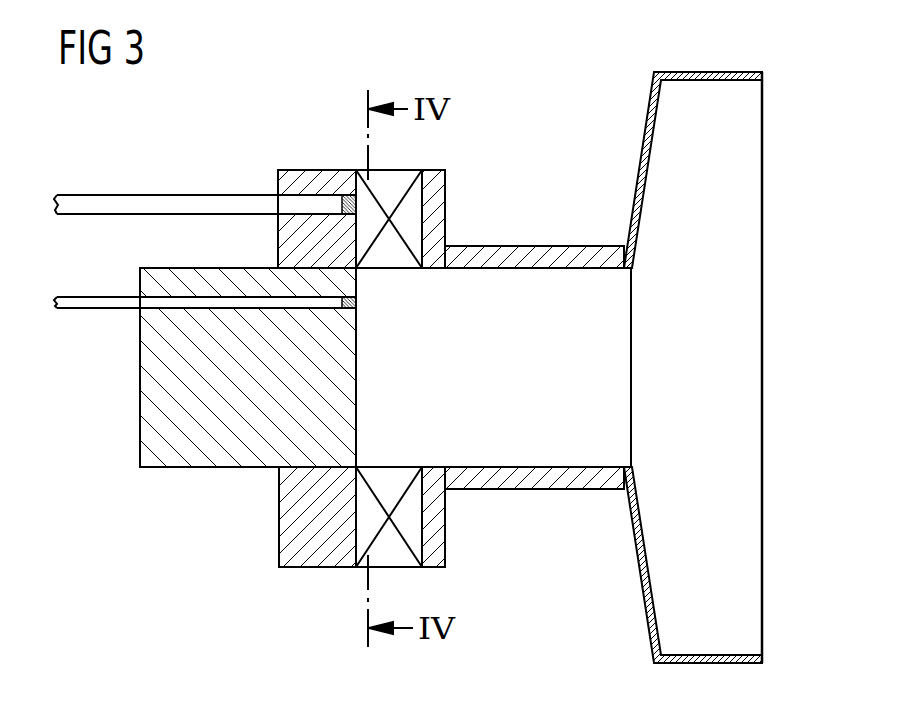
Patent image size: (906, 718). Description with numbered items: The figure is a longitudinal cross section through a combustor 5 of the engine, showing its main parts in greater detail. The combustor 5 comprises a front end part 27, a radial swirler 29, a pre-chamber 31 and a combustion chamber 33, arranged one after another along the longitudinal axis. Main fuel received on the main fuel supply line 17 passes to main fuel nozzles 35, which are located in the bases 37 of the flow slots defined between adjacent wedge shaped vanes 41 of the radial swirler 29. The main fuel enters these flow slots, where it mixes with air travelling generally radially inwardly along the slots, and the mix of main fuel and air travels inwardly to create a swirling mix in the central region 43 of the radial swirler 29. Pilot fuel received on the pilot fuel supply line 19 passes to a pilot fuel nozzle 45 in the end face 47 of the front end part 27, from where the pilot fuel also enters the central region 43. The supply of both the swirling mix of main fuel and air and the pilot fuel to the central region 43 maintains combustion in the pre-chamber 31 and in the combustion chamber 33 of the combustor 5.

The combustor 5 is at (536, 98).
The main fuel supply line 17 is at (172, 206).
The pilot fuel supply line 19 is at (98, 303).
The front end part 27 is at (221, 500).
The radial swirler 29 is at (442, 142).
The pre-chamber 31 is at (562, 218).
The combustion chamber 33 is at (708, 152).
The main fuel nozzles 35 is at (356, 204).
The bases of flow slots 37 is at (358, 250).
The wedge shaped vanes 41 is at (398, 560).
The central region 43 is at (405, 386).
The pilot fuel nozzle 45 is at (356, 302).
The end face 47 is at (356, 443).